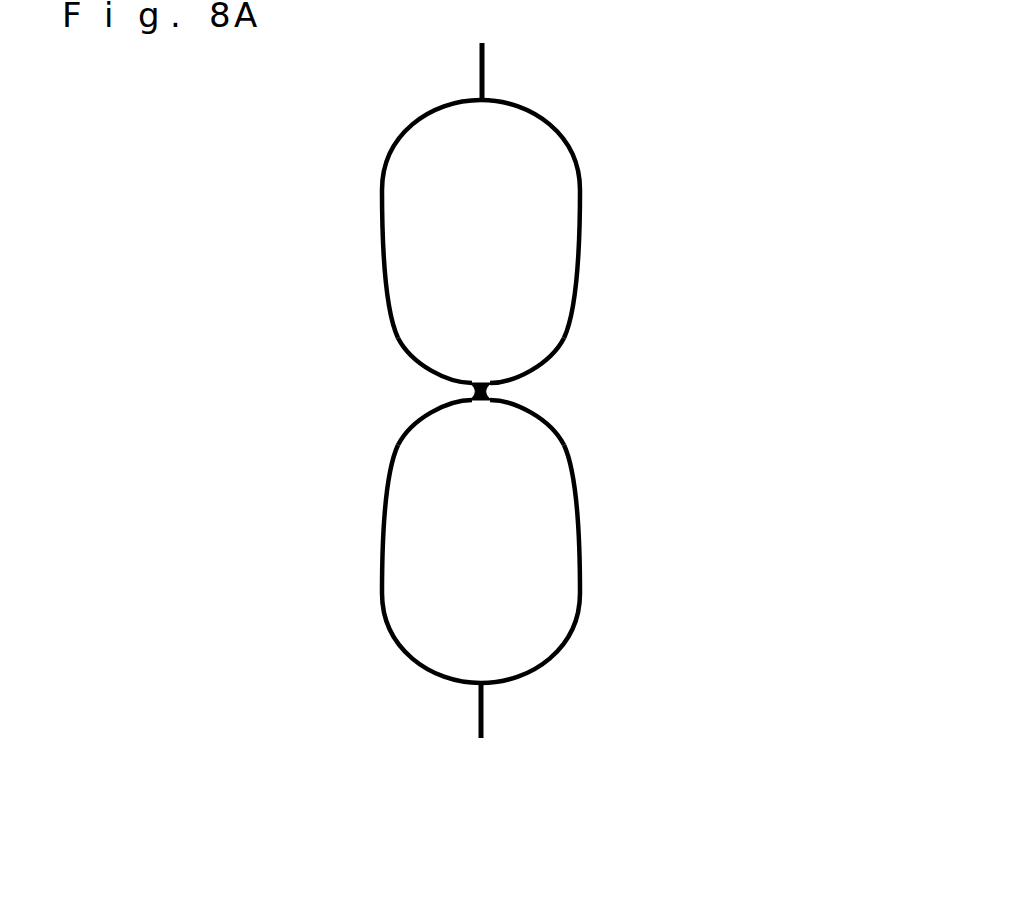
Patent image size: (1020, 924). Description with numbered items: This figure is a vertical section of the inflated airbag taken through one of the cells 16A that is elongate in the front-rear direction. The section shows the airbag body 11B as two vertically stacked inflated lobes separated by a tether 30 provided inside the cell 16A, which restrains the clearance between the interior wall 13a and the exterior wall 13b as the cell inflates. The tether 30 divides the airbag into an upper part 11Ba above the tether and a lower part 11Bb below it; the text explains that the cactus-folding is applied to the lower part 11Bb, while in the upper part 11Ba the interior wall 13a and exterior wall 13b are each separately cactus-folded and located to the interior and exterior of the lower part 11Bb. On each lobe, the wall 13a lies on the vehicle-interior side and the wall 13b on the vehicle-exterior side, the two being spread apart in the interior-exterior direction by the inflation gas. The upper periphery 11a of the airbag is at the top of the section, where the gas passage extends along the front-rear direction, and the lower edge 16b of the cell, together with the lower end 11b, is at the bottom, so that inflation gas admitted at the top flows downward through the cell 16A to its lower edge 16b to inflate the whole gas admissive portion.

The upper periphery 11a is at (486, 94).
The lower end portion 11b is at (478, 715).
The bag body 11B is at (446, 391).
The cell 16A is at (217, 138).
The upper part 11Ba is at (593, 197).
The lower part 11Bb is at (605, 587).
The interior wall 13a is at (578, 293).
The exterior wall 13b is at (380, 242).
The tether 30 is at (487, 390).
The lower edge 16b is at (486, 686).